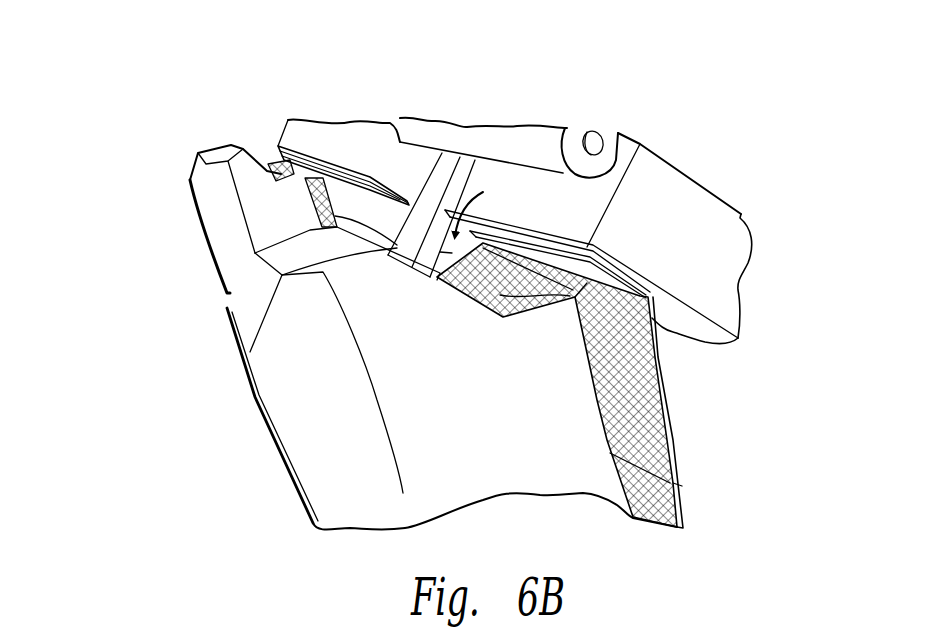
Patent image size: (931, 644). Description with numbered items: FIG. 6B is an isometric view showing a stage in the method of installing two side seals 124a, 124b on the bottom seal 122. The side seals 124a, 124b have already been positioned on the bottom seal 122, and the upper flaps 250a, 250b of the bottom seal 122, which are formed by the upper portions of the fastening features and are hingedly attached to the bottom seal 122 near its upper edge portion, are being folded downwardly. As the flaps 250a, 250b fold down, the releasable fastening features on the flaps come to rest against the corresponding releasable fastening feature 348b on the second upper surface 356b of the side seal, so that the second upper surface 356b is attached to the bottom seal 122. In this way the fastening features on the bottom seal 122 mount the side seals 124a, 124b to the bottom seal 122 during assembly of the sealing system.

The bottom seal 122 is at (680, 503).
The side seal 124a is at (198, 218).
The side seal 124b is at (277, 378).
The flap 250a is at (283, 149).
The flap 250b is at (537, 252).
The releasable fastening feature 348b is at (452, 253).
The second upper surface 356b is at (663, 398).